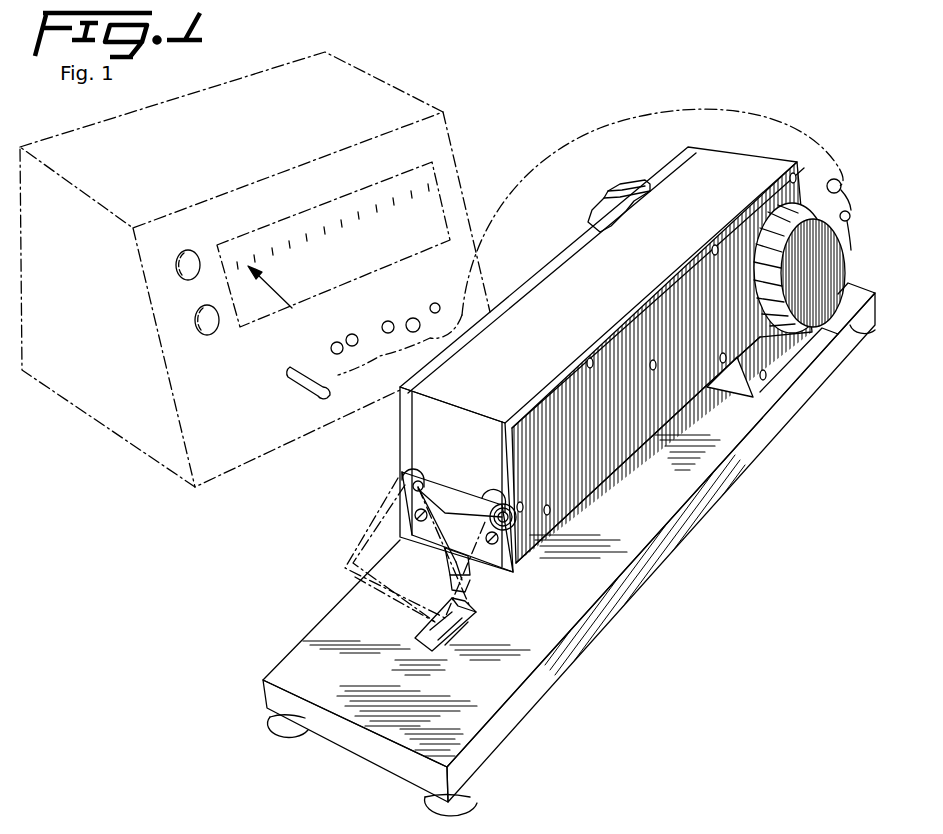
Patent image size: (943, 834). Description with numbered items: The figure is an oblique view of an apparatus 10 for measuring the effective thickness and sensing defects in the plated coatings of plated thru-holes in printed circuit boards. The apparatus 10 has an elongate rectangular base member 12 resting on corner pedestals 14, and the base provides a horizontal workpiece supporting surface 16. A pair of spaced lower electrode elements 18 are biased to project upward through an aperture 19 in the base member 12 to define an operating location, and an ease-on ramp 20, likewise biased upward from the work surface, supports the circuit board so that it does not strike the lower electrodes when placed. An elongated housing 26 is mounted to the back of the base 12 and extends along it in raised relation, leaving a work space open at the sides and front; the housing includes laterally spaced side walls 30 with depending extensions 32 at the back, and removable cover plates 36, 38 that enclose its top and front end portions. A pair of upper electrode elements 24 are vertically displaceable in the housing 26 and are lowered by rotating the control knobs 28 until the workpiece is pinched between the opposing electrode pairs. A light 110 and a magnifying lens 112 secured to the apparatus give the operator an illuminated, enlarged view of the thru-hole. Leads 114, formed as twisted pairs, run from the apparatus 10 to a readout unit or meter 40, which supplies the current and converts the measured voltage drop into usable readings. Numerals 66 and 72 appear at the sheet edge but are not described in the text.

The apparatus 10 is at (385, 455).
The base member 12 is at (475, 612).
The corner pedestals 14 is at (470, 790).
The workpiece supporting surface 16 is at (297, 660).
The lower electrode elements 18 is at (467, 578).
The aperture 19 is at (458, 562).
The ease-on ramp 20 is at (443, 627).
The upper electrode elements 24 is at (470, 552).
The elongated housing 26 is at (620, 453).
The control knobs 28 is at (836, 256).
The side walls 30 is at (600, 467).
The depending extensions 32 is at (772, 355).
The removable cover plate 36 is at (425, 440).
The removable cover plate 38 is at (553, 285).
The readout unit or meter 40 is at (375, 88).
The element 66 is at (588, 833).
The element 72 is at (660, 833).
The light 110 is at (462, 563).
The magnifying lens 112 is at (375, 547).
The leads 114 is at (703, 108).